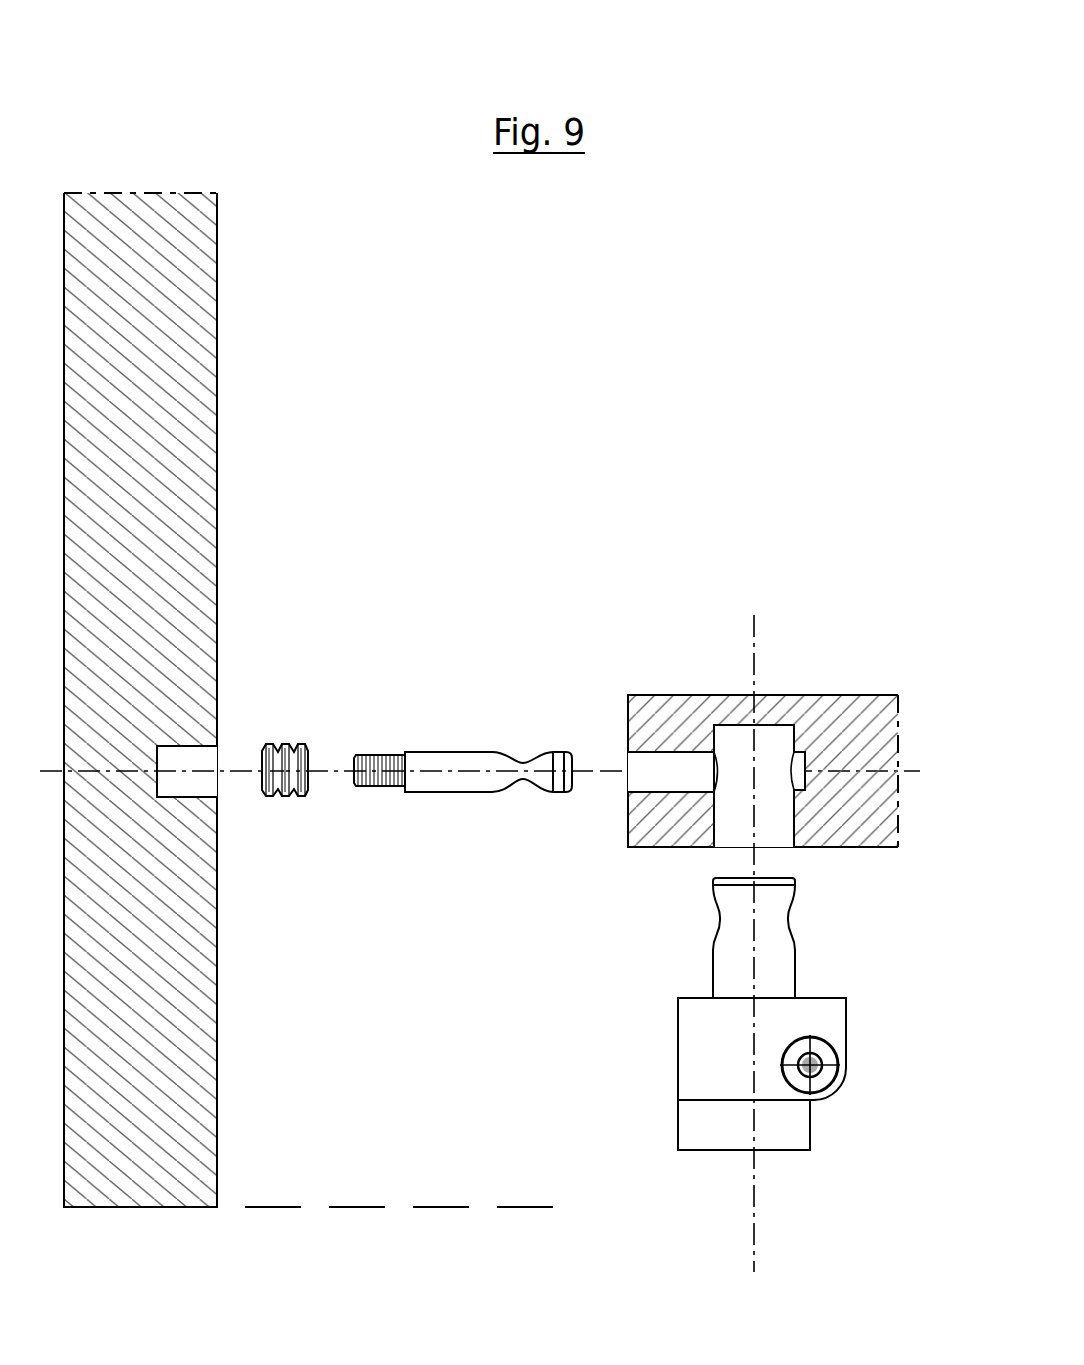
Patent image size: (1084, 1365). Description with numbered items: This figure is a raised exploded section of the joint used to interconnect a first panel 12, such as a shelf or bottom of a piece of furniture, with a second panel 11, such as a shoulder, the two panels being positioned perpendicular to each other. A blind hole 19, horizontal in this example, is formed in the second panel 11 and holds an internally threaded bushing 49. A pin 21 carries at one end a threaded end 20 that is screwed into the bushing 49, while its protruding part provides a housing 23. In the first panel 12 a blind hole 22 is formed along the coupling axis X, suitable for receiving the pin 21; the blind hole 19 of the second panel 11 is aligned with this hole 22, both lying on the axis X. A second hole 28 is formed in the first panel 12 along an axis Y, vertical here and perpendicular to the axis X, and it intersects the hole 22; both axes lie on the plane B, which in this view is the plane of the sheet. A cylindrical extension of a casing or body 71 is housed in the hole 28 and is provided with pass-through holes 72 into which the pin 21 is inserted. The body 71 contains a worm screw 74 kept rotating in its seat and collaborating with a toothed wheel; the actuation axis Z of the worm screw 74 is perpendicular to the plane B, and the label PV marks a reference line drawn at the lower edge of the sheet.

The second panel 11 is at (165, 205).
The blind hole 19 is at (213, 797).
The internally threaded bushing 49 is at (283, 746).
The threaded end 20 is at (463, 738).
The pin 21 is at (450, 750).
The housing 23 is at (532, 777).
The first panel 12 is at (747, 748).
The blind hole 22 is at (643, 790).
The second hole 28 is at (740, 725).
The pass-through holes 72 is at (790, 922).
The body 71 is at (678, 1035).
The worm screw 74 is at (797, 1068).
The coupling axis X is at (593, 771).
The axis of second hole Y is at (756, 853).
The actuation axis Z is at (806, 1070).
The plane B is at (385, 1018).
The reference plane PV is at (280, 1207).